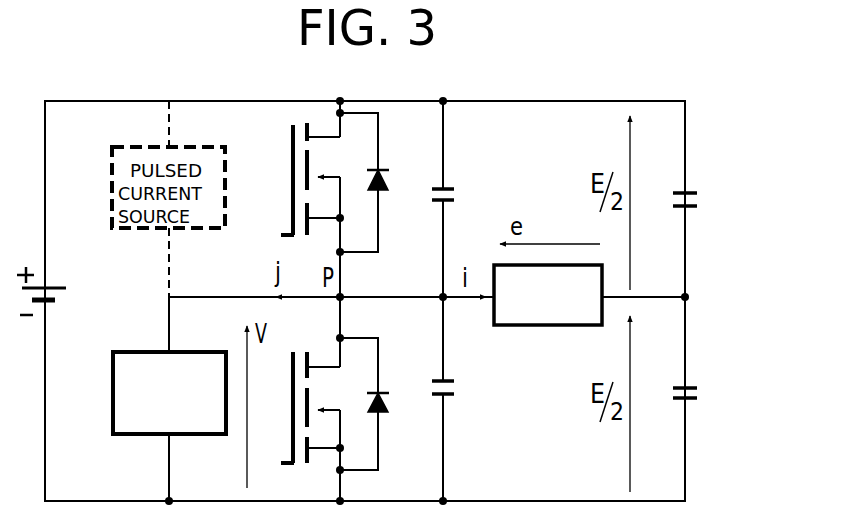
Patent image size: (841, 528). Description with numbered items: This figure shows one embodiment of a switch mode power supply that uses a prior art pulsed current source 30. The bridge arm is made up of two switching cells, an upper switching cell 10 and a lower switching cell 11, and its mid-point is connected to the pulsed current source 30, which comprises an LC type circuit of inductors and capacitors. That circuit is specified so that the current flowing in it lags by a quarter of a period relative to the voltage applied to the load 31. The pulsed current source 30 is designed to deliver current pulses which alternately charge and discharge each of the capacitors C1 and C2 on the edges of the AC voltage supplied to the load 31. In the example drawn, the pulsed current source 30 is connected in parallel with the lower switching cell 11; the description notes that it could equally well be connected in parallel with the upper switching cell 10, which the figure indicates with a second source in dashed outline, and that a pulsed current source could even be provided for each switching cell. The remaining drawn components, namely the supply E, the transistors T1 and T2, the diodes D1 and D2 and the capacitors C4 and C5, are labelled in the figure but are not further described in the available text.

The DC voltage source E is at (57, 285).
The pulsed current source 30 is at (138, 420).
The upper switching transistor T1 is at (290, 163).
The lower switching transistor T2 is at (292, 395).
The upper freewheeling diode D1 is at (384, 170).
The lower freewheeling diode D2 is at (385, 400).
The capacitor C1 is at (455, 203).
The capacitor C2 is at (452, 397).
The switching cell 10 is at (468, 159).
The switching cell 11 is at (464, 474).
The load 31 is at (575, 312).
The upper supply capacitor C4 is at (695, 210).
The lower supply capacitor C5 is at (697, 403).